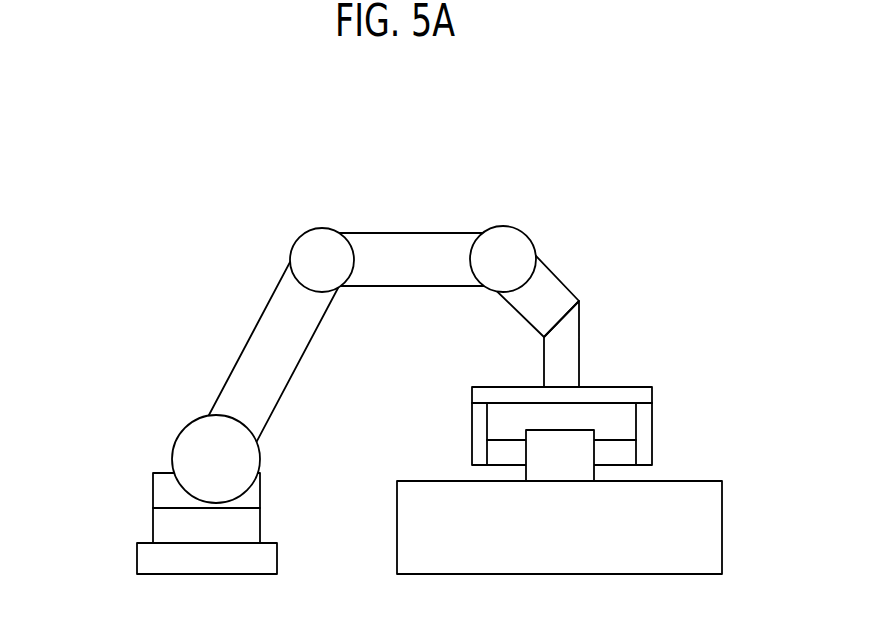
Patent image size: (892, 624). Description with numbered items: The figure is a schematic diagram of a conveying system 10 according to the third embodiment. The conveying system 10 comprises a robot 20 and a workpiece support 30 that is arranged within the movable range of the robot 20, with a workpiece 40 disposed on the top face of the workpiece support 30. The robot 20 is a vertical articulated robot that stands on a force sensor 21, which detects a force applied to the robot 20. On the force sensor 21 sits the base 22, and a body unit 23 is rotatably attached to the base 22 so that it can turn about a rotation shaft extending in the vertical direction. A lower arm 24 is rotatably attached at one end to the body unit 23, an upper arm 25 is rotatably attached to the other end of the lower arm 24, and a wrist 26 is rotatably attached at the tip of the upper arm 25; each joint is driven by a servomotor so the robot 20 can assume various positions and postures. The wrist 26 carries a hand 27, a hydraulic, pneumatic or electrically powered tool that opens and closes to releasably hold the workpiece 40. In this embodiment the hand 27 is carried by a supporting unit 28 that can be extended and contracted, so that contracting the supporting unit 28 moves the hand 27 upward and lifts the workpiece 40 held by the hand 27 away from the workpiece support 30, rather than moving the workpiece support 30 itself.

The conveying system 10 is at (103, 116).
The robot 20 is at (416, 358).
The force sensor 21 is at (143, 540).
The base 22 is at (262, 519).
The body unit 23 is at (162, 470).
The lower arm 24 is at (250, 338).
The upper arm 25 is at (405, 232).
The wrist 26 is at (550, 267).
The hand 27 is at (655, 414).
The supporting unit 28 is at (582, 341).
The workpiece support 30 is at (723, 500).
The workpiece 40 is at (595, 470).